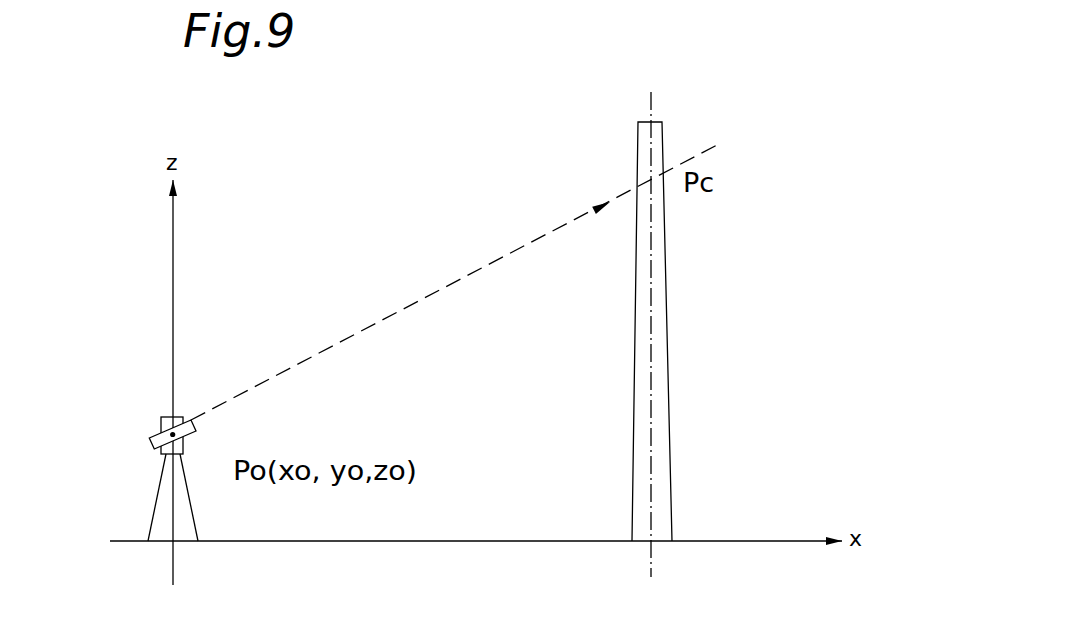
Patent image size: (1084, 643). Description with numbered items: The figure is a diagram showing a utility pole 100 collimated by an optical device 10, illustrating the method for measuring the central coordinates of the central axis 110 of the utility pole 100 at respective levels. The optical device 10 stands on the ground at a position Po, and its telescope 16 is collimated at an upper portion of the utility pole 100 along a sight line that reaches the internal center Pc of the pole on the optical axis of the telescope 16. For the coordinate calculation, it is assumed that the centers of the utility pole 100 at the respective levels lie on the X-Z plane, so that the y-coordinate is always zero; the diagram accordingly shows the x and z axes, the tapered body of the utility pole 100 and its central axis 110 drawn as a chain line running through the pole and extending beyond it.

The surveying instrument 10 is at (155, 436).
The telescope 16 is at (189, 421).
The utility pole 100 is at (668, 355).
The central axis 110 is at (652, 560).